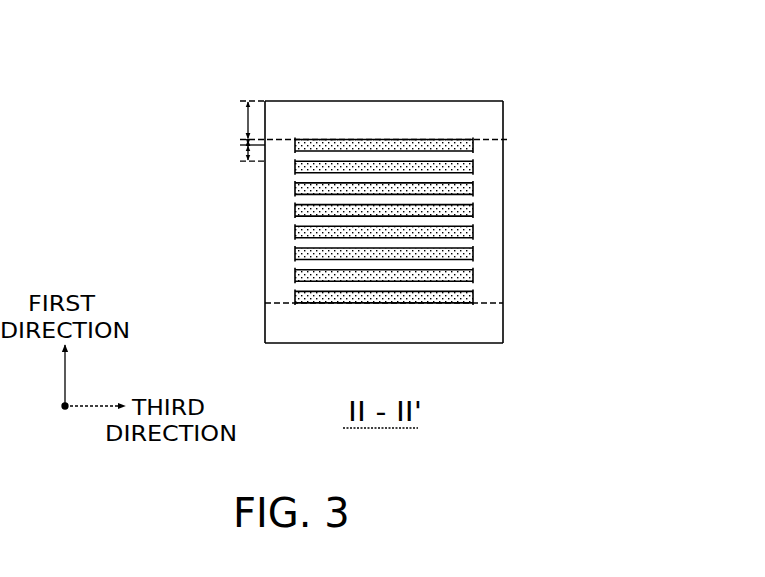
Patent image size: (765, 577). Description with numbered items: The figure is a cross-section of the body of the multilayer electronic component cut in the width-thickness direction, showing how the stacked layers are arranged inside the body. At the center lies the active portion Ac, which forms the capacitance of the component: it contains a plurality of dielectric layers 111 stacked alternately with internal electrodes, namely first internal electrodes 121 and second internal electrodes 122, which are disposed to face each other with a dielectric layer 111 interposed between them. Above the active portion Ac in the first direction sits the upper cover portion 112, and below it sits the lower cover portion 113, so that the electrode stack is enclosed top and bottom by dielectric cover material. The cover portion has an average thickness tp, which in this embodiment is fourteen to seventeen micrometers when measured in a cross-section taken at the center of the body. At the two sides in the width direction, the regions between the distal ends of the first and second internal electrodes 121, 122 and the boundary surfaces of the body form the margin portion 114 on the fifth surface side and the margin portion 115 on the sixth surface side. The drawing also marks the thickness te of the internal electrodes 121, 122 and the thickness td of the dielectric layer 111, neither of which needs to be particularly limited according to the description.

The upper cover portion 112 is at (391, 119).
The lower cover portion 113 is at (497, 322).
The margin portion 114 is at (280, 258).
The margin portion 115 is at (497, 245).
The dielectric layer 111 is at (428, 206).
The first internal electrode 121 is at (472, 141).
The second internal electrode 122 is at (472, 163).
The active portion Ac is at (294, 222).
The average thickness of the cover portion tp is at (243, 131).
The thickness of the internal electrodes te is at (242, 142).
The thickness of the dielectric layer td is at (242, 153).